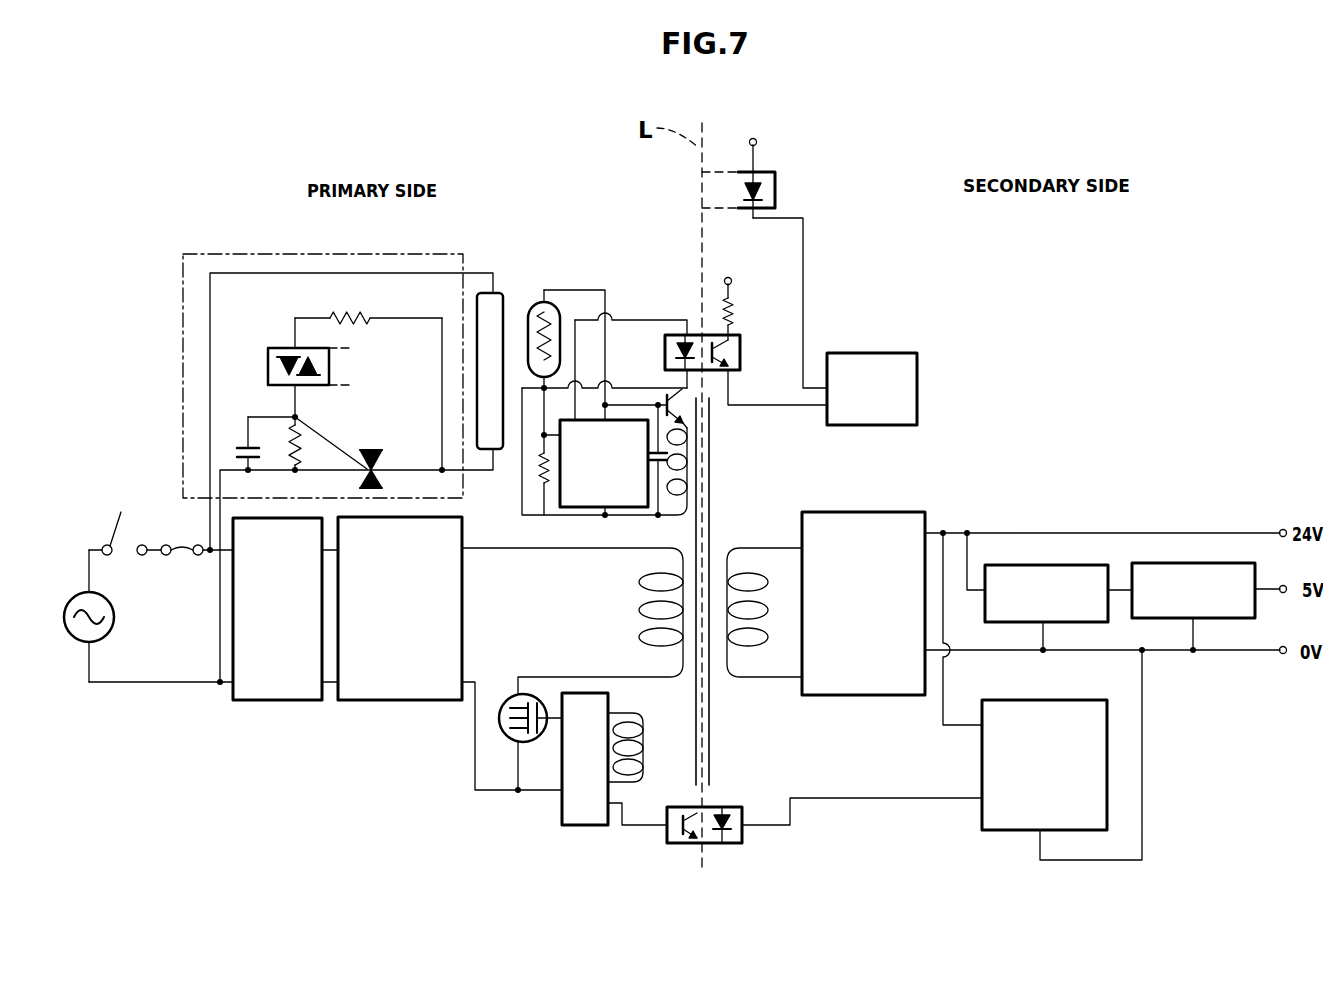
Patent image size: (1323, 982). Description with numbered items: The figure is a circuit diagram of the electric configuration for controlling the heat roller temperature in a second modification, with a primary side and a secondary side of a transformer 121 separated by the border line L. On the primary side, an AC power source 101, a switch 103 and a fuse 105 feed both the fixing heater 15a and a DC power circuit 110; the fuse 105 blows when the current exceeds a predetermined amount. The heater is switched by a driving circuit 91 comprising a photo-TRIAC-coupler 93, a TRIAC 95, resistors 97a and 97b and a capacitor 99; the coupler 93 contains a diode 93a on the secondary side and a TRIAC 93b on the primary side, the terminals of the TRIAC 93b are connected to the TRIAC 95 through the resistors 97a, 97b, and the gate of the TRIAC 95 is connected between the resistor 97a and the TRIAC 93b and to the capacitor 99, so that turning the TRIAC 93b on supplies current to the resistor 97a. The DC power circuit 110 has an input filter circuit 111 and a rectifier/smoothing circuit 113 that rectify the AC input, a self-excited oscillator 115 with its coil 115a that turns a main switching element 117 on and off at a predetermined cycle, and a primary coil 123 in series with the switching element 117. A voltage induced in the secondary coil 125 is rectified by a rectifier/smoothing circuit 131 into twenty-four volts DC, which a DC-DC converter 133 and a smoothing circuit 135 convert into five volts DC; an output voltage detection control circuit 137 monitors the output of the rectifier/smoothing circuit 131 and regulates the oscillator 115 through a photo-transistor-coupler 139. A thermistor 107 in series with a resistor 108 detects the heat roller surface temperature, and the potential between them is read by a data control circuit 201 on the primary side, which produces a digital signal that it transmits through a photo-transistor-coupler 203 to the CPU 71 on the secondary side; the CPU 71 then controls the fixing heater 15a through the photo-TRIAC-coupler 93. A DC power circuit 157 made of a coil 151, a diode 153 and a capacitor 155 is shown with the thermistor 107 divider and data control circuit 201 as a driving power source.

The fixing heater 15a is at (499, 292).
The CPU 71 is at (873, 352).
The driving circuit 91 is at (183, 348).
The photo-TRIAC-coupler 93 is at (508, 262).
The diode 93a is at (740, 193).
The TRIAC 93b is at (312, 372).
The TRIAC 95 is at (375, 448).
The resistor 97a is at (308, 436).
The resistor 97b is at (370, 316).
The capacitor 99 is at (247, 415).
The power source 101 is at (114, 617).
The switch 103 is at (108, 537).
The fuse 105 is at (190, 546).
The thermistor 107 is at (540, 303).
The resistor 108 is at (542, 474).
The DC power circuit 110 is at (505, 682).
The input filter circuit 111 is at (283, 701).
The rectifier/smoothing circuit 113 is at (392, 700).
The oscillator 115 is at (560, 810).
The coil 115a is at (643, 774).
The main switching element 117 is at (542, 694).
The transformer 121 is at (638, 591).
The coil 123 is at (648, 612).
The coil 125 is at (772, 578).
The rectifier/smoothing circuit 131 is at (853, 511).
The DC-DC converter 133 is at (1055, 564).
The smoothing circuit 135 is at (1148, 562).
The output voltage detection control circuit 137 is at (1040, 700).
The photo-transistor-coupler 139 is at (742, 838).
The coil 151 is at (690, 455).
The diode 153 is at (668, 392).
The capacitor 155 is at (659, 463).
The DC power circuit 157 is at (706, 492).
The data control circuit 201 is at (591, 509).
The photo-transistor-coupler 203 is at (742, 350).